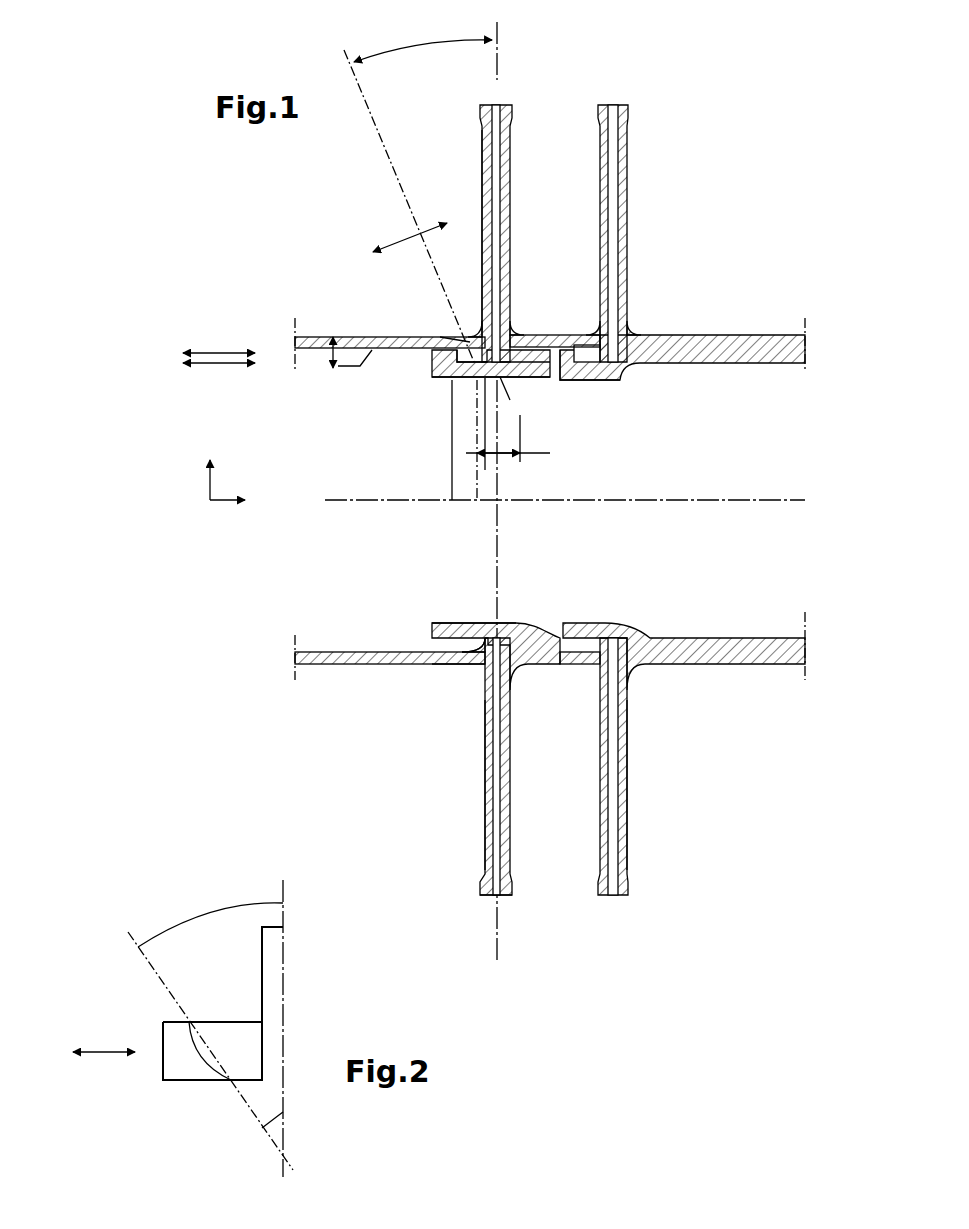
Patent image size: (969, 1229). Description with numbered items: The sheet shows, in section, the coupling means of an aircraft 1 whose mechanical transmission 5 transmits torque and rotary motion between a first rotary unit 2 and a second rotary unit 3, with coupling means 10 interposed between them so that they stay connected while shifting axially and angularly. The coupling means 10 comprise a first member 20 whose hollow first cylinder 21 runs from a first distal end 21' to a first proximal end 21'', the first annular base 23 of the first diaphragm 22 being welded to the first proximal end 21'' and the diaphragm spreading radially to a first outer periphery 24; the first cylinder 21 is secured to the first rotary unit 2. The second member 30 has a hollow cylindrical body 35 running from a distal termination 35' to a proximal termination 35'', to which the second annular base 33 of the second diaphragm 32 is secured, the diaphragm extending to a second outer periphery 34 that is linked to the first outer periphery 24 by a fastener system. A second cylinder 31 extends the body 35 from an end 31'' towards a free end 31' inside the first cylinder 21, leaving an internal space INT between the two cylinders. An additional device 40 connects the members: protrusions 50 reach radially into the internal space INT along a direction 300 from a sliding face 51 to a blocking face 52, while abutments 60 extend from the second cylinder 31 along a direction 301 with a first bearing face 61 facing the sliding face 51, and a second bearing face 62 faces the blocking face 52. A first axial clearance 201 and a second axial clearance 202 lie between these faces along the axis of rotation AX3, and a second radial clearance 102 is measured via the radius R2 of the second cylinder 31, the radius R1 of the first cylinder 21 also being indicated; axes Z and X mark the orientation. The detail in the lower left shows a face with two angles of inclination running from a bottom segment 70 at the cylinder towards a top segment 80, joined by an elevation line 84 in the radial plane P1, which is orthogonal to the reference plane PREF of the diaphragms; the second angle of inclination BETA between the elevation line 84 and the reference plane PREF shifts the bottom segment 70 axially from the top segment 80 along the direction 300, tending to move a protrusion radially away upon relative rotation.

In FIG. 1, the aircraft 1 is at (494, 287).
In FIG. 1, the first rotary unit 2 is at (325, 668).
In FIG. 1, the second rotary unit 3 is at (735, 346).
In FIG. 1, the mechanical transmission 5 is at (551, 760).
In FIG. 1, the coupling means 10 is at (440, 842).
In FIG. 1, the first member 20 is at (482, 700).
In FIG. 1, the first cylinder 21 is at (424, 688).
In FIG. 1, the first distal end 21' is at (404, 300).
In FIG. 1, the first proximal end 21'' is at (435, 310).
In FIG. 1, the first diaphragm 22 is at (481, 152).
In FIG. 1, the first annular base 23 is at (470, 622).
In FIG. 1, the first outer periphery 24 is at (498, 104).
In FIG. 1, the second member 30 is at (600, 690).
In FIG. 1, the second cylinder 31 is at (652, 625).
In FIG. 1, the free end 31' is at (460, 640).
In FIG. 1, the end of second cylinder 31'' is at (571, 400).
In FIG. 1, the second diaphragm 32 is at (512, 150).
In FIG. 1, the second annular base 33 is at (530, 685).
In FIG. 1, the second outer periphery 34 is at (490, 898).
In FIG. 1, the hollow cylindrical body 35 is at (588, 377).
In FIG. 1, the distal termination 35' is at (654, 306).
In FIG. 1, the proximal termination 35'' is at (569, 301).
In FIG. 1, the additional device 40 is at (505, 386).
In FIG. 1, the protrusion 50 is at (482, 322).
In FIG. 1, the sliding face 51 is at (440, 362).
In FIG. 1, the blocking face 52 is at (525, 347).
In FIG. 1, the abutment 60 is at (392, 343).
In FIG. 1, the first bearing face 61 is at (466, 378).
In FIG. 1, the second bearing face 62 is at (502, 388).
In FIG. 2, the bottom segment 70 is at (232, 1084).
In FIG. 2, the top segment 80 is at (190, 1020).
In FIG. 2, the elevation line 84 is at (283, 1113).
In FIG. 1, the second radial clearance 102 is at (332, 366).
In FIG. 1, the first axial clearance 201 is at (372, 250).
In FIG. 1, the second axial clearance 202 is at (552, 453).
In FIG. 1, the axial direction 300 is at (218, 352).
In FIG. 2, the axial direction 300 is at (104, 1050).
In FIG. 1, the direction parallel to second axis 301 is at (221, 366).
In FIG. 1, the radius of first cylinder R1 is at (466, 482).
In FIG. 1, the radius of second cylinder R2 is at (450, 468).
In FIG. 1, the axis of rotation AX3 is at (782, 499).
In FIG. 1, the radial plane P1 is at (373, 206).
In FIG. 2, the radial plane P1 is at (191, 1049).
In FIG. 1, the reference plane PREF is at (500, 946).
In FIG. 2, the reference plane PREF is at (284, 1030).
In FIG. 1, the second angle of inclination BETA is at (418, 44).
In FIG. 2, the second angle of inclination BETA is at (218, 895).
In FIG. 1, the internal space INT is at (455, 682).
In FIG. 1, the Z axis Z is at (196, 476).
In FIG. 1, the X axis X is at (227, 515).